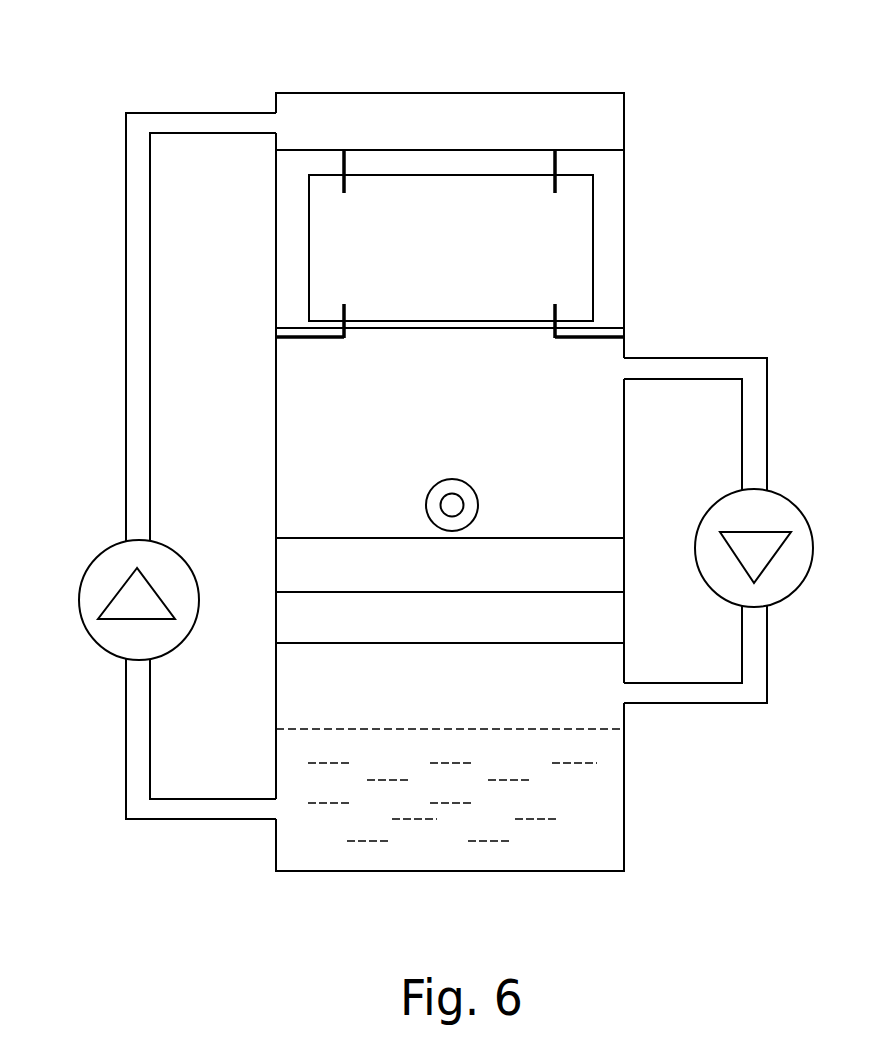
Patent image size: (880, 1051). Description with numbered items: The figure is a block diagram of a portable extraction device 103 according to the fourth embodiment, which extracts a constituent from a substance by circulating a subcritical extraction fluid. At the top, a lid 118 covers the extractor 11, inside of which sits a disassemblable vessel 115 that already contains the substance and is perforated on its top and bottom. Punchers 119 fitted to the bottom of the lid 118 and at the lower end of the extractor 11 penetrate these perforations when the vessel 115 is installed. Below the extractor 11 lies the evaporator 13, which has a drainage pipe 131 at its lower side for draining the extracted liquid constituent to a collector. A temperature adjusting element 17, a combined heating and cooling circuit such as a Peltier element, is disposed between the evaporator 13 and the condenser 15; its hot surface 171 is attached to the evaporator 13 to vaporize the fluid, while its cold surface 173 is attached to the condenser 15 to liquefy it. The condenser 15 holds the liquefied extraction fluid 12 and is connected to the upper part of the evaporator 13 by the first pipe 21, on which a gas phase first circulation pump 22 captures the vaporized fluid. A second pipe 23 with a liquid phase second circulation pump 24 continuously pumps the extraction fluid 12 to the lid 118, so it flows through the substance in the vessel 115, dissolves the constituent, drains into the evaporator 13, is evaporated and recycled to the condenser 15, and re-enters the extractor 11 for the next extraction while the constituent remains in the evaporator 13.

The portable extraction device 103 is at (842, 45).
The extractor 11 is at (603, 257).
The vessel 115 is at (570, 227).
The lid 118 is at (455, 122).
The punchers 119 is at (555, 190).
The extraction fluid 12 is at (575, 808).
The evaporator 13 is at (585, 462).
The drainage pipe 131 is at (452, 505).
The condenser 15 is at (555, 701).
The temperature adjusting element 17 is at (402, 474).
The hot surface 171 is at (325, 575).
The cold surface 173 is at (358, 615).
The first pipe 21 is at (757, 470).
The first circulation pump 22 is at (760, 560).
The second pipe 23 is at (142, 403).
The second circulation pump 24 is at (124, 602).